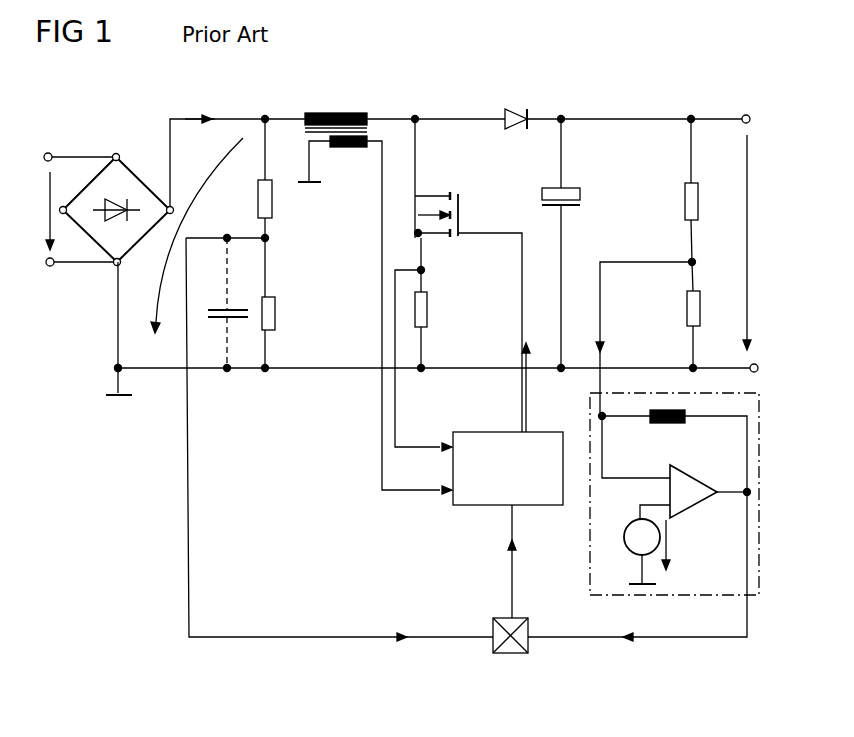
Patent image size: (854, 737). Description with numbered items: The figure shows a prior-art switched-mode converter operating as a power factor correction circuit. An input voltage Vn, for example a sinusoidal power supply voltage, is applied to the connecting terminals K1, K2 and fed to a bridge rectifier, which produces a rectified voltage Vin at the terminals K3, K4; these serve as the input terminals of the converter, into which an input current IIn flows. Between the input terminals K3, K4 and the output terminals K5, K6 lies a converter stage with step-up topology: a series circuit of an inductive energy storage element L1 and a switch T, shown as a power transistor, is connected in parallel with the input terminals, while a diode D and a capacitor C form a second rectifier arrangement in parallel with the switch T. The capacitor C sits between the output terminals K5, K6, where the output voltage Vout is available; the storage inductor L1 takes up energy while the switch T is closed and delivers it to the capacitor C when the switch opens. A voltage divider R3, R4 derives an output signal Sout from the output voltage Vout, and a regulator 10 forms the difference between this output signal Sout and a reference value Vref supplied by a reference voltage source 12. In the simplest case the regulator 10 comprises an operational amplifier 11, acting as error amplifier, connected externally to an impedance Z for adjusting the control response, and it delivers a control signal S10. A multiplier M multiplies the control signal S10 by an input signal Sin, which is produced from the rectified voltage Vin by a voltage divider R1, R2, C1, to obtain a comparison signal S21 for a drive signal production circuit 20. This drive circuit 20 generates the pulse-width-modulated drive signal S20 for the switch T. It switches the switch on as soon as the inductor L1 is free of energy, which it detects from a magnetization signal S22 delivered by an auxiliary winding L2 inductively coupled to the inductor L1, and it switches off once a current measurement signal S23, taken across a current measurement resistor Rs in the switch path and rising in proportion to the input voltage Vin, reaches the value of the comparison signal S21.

The power supply connecting terminal K1 is at (48, 153).
The power supply connecting terminal K2 is at (50, 266).
The input terminal K3 is at (168, 206).
The input terminal K4 is at (115, 368).
The output terminal K5 is at (745, 114).
The output terminal K6 is at (750, 364).
The input voltage Vn is at (38, 211).
The rectified voltage Vin is at (197, 235).
The input current IIn is at (201, 109).
The inductive energy storage element L1 is at (345, 113).
The auxiliary winding L2 is at (350, 147).
The voltage divider resistor R1 is at (272, 198).
The voltage divider resistor R2 is at (276, 315).
The capacitor C1 is at (222, 308).
The current measurement resistor Rs is at (428, 305).
The switch T is at (460, 210).
The diode D is at (532, 113).
The capacitor C is at (567, 188).
The voltage divider resistor R3 is at (684, 205).
The voltage divider resistor R4 is at (687, 312).
The output voltage Vout is at (769, 242).
The output signal Sout is at (644, 339).
The drive signal S20 is at (506, 386).
The drive signal production circuit 20 is at (508, 432).
The current measurement signal S23 is at (423, 360).
The magnetization signal S22 is at (409, 317).
The comparison signal S21 is at (493, 561).
The input signal Sin is at (339, 439).
The multiplier M is at (512, 655).
The control signal S10 is at (637, 582).
The regulator 10 is at (588, 572).
The operational amplifier 11 is at (694, 472).
The reference voltage source 12 is at (633, 522).
The impedance Z is at (657, 424).
The reference value Vref is at (684, 545).